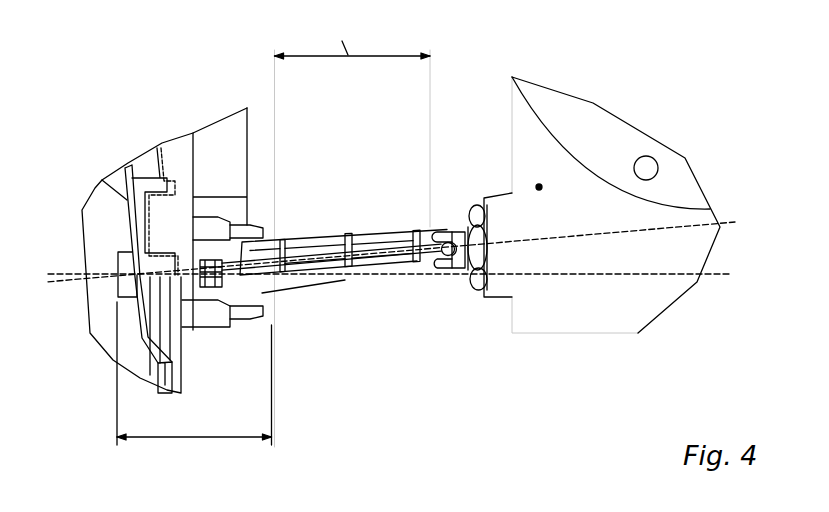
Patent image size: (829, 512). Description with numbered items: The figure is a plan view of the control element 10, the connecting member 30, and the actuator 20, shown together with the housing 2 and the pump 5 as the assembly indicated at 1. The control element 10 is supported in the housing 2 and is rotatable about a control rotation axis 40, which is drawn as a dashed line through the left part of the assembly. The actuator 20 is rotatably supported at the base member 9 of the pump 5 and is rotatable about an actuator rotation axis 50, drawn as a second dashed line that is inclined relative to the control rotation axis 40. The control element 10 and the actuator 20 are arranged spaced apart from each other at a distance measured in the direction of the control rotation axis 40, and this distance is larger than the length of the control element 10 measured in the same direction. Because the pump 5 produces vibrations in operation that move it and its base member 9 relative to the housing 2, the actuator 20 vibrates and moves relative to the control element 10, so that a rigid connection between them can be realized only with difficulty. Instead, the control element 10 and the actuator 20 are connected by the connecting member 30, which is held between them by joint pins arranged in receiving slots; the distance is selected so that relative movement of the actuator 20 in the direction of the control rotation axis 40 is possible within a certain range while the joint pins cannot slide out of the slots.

The drive unit 1 is at (197, 438).
The housing 2 is at (163, 367).
The pump 5 is at (657, 287).
The base member 9 is at (539, 187).
The control element 10 is at (214, 300).
The actuator 20 is at (458, 220).
The connecting member 30 is at (325, 226).
The control rotation axis 40 is at (63, 273).
The actuator rotation axis 50 is at (722, 223).